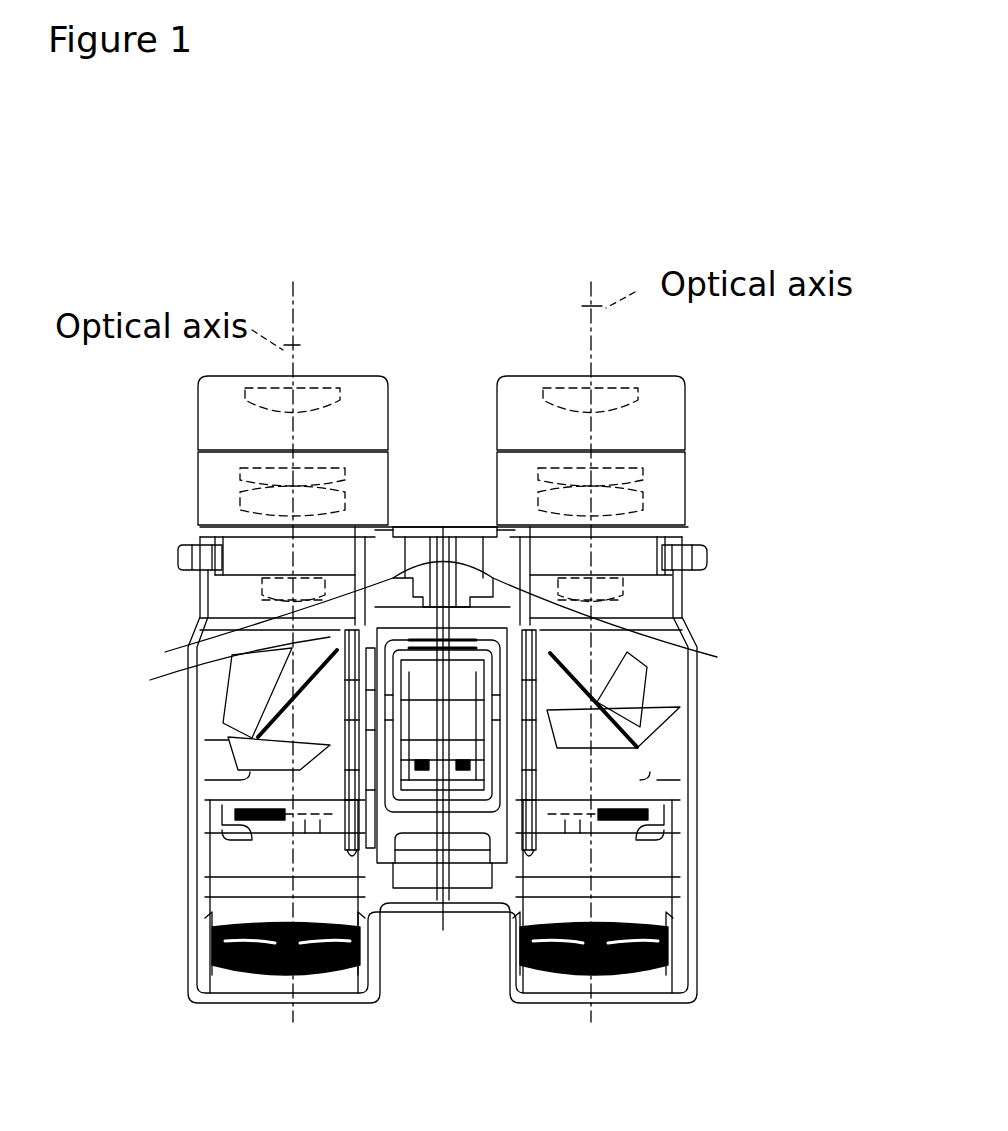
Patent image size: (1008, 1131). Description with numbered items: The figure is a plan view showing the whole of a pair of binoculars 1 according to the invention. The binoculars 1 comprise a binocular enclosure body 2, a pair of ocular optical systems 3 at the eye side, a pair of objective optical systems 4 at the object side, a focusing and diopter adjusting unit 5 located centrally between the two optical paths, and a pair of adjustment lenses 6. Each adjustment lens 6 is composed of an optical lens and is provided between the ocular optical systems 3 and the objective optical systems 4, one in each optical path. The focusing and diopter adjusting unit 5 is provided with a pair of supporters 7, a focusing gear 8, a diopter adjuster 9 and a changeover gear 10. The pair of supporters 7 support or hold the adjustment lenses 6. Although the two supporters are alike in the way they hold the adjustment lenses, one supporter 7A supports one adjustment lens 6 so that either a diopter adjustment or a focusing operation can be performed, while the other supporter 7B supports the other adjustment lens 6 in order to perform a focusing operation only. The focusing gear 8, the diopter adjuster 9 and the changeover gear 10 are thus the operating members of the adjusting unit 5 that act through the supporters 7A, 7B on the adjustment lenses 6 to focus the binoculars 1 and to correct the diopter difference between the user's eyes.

The pair of binoculars 1 is at (752, 391).
The binocular enclosure body 2 is at (232, 556).
The ocular optical systems 3 is at (668, 472).
The objective optical systems 4 is at (650, 992).
The focusing and diopter adjusting unit 5 is at (330, 637).
The adjustment lenses 6 is at (240, 822).
The supporters 7 is at (713, 608).
The supporter 7A is at (540, 634).
The supporter 7B is at (333, 653).
The focusing gear 8 is at (365, 688).
The diopter adjuster 9 is at (512, 683).
The changeover gear 10 is at (497, 840).